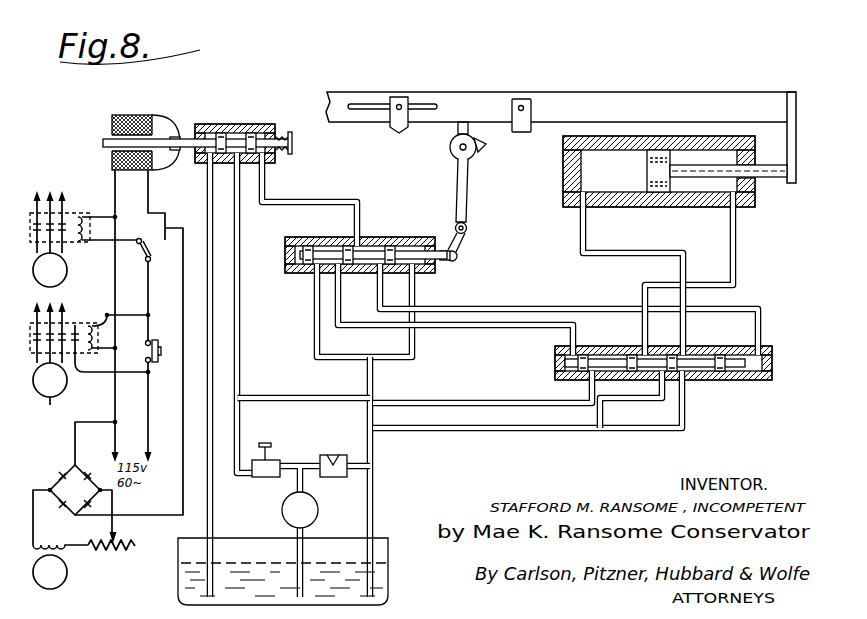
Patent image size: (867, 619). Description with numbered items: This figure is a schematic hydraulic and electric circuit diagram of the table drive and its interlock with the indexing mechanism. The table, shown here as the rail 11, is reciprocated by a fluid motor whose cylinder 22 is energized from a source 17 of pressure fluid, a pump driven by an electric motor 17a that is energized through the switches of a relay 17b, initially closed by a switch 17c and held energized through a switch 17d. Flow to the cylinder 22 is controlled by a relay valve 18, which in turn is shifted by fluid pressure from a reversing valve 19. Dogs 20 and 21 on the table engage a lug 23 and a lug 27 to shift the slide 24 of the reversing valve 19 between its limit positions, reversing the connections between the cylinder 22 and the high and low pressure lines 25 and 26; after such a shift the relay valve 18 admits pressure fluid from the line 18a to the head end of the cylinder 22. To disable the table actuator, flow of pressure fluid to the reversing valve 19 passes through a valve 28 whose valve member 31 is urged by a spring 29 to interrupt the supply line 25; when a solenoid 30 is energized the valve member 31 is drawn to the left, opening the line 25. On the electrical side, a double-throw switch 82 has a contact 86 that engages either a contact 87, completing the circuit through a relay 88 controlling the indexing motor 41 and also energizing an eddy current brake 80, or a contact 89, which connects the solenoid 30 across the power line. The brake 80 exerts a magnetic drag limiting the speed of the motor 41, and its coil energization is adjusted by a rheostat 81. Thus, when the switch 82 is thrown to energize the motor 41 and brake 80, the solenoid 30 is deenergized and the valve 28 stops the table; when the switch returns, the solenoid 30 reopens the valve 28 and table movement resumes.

The rail 11 is at (613, 102).
The source of pressure fluid 17 is at (282, 511).
The electric motor 17a is at (50, 405).
The relay 17b is at (68, 326).
The switch 17c is at (147, 341).
The switch 17d is at (80, 368).
The relay valve 18 is at (692, 387).
The line 18a is at (487, 399).
The reversing valve 19 is at (366, 235).
The dog 20 is at (522, 131).
The dog 21 is at (399, 132).
The cylinder 22 is at (605, 190).
The lug 23 is at (454, 142).
The slide 24 is at (388, 236).
The high pressure line 25 is at (240, 333).
The low pressure line 26 is at (373, 382).
The lug 27 is at (480, 149).
The valve 28 is at (198, 118).
The spring 29 is at (287, 130).
The solenoid 30 is at (141, 122).
The valve member 31 is at (251, 139).
The indexing motor 41 is at (68, 270).
The eddy current brake 80 is at (61, 582).
The rheostat 81 is at (113, 546).
The switch 82 is at (136, 256).
The contact 86 is at (153, 255).
The contact 87 is at (139, 238).
The relay 88 is at (70, 215).
The contact 89 is at (171, 206).